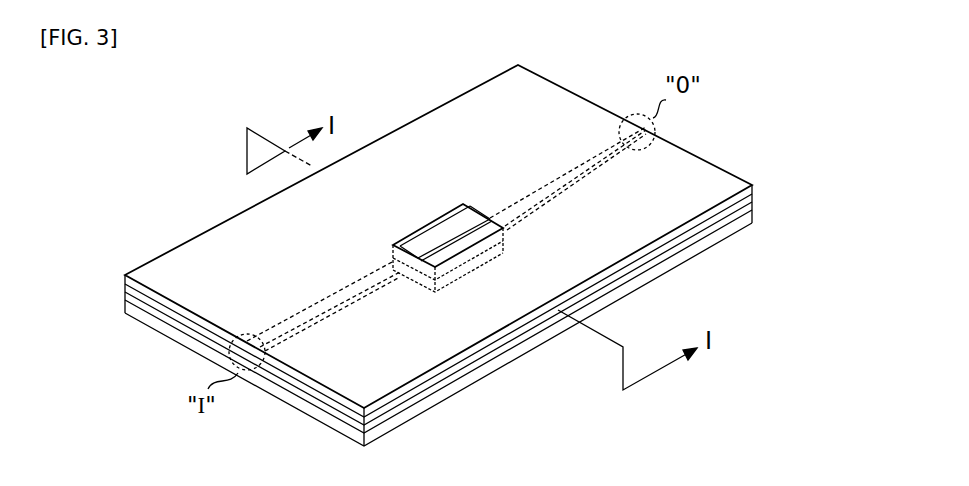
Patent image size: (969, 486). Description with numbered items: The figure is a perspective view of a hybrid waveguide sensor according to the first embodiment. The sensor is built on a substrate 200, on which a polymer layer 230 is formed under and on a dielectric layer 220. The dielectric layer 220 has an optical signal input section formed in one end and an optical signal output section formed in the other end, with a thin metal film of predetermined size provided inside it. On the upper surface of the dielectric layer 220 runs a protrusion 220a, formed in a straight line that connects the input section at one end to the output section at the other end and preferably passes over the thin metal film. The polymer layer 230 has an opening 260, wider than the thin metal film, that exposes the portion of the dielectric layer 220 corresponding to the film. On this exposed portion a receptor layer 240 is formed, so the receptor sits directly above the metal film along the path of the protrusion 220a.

The substrate 200 is at (380, 435).
The dielectric layer 220 is at (125, 290).
The protrusion 220a is at (246, 345).
The polymer layer 230 is at (752, 189).
The receptor layer 240 is at (445, 233).
The opening 260 is at (443, 257).